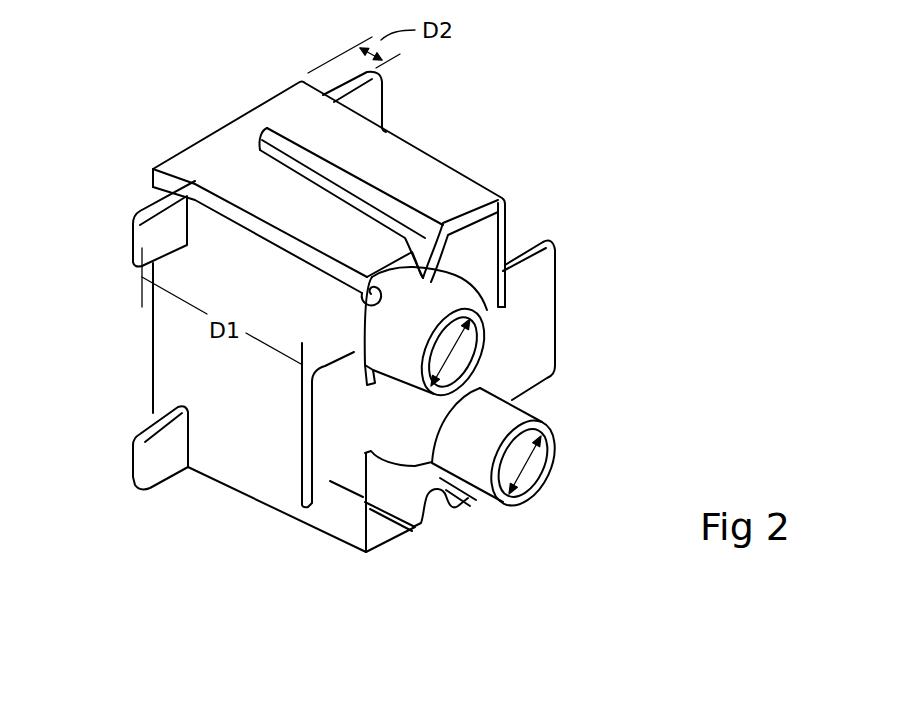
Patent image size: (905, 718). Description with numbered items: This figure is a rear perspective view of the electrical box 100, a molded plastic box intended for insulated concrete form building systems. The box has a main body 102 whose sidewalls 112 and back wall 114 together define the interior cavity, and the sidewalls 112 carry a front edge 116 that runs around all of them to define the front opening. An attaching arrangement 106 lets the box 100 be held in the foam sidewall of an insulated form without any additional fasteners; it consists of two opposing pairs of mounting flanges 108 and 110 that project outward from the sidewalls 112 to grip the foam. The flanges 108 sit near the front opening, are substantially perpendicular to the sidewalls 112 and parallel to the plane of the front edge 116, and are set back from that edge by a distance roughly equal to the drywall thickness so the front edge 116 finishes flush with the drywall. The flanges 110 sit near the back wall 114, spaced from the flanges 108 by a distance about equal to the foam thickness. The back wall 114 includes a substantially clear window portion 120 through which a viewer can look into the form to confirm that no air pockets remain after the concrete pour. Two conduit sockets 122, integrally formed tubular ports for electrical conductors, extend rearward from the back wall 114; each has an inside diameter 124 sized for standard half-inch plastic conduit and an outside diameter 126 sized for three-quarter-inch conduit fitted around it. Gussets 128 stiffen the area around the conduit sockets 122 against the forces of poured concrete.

The electrical box 100 is at (462, 104).
The main body 102 is at (173, 350).
The attaching arrangement 106 is at (302, 532).
The mounting flanges 108 is at (136, 237).
The mounting flanges 110 is at (320, 467).
The sidewalls 112 is at (423, 175).
The back wall 114 is at (415, 522).
The front edge 116 is at (233, 120).
The window portion 120 is at (488, 374).
The conduit sockets 122 is at (488, 304).
The inside diameter 124 is at (527, 480).
The outside diameter 126 is at (452, 353).
The gussets 128 is at (360, 297).